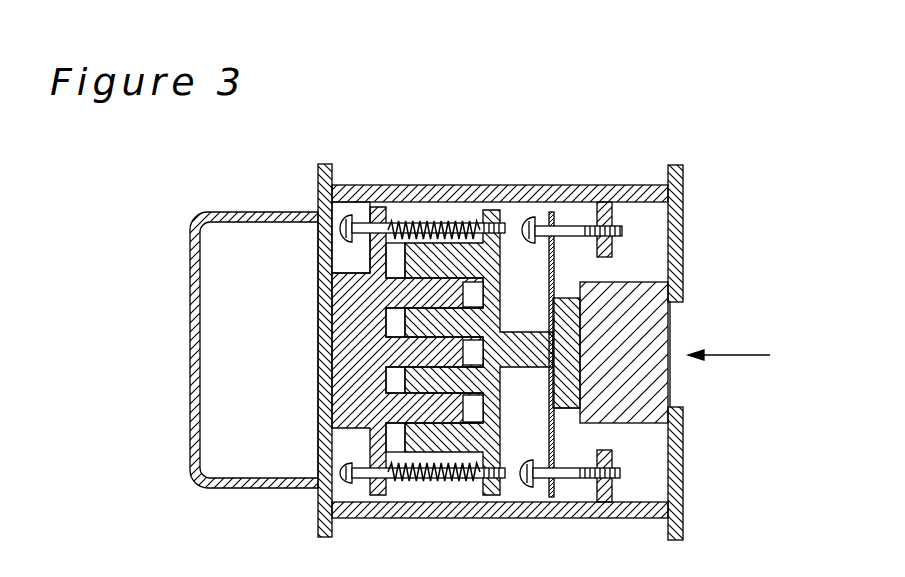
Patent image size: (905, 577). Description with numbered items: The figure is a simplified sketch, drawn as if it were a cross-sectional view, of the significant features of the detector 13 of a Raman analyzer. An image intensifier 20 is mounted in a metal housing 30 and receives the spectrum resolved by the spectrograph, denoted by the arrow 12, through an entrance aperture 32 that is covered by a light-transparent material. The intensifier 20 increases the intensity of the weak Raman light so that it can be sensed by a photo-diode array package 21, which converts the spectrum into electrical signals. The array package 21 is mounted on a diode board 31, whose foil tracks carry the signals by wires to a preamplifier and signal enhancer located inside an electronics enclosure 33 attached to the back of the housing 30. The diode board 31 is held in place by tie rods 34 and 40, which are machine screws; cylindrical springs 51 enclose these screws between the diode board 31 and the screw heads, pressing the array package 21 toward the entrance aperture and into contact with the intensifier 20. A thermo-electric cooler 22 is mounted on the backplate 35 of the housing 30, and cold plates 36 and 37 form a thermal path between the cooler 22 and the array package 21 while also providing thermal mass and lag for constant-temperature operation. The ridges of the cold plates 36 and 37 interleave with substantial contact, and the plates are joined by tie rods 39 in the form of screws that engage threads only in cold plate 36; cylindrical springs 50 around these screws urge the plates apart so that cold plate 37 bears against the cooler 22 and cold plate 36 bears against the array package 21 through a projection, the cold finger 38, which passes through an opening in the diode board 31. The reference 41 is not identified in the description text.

The arrow 12 is at (727, 350).
The detector 13 is at (570, 181).
The image intensifier 20 is at (612, 281).
The photo-diode array package 21 is at (556, 409).
The thermo-electric cooler 22 is at (320, 366).
The metal housing 30 is at (596, 186).
The diode board 31 is at (551, 290).
The entrance aperture 32 is at (672, 377).
The electronics enclosure 33 is at (190, 404).
The tie rod 34 is at (614, 232).
The backplate 35 is at (317, 188).
The cold plate 36 is at (500, 424).
The cold plate 37 is at (372, 256).
The cold finger 38 is at (552, 374).
The tie rods 39 is at (430, 235).
The tie rod 40 is at (613, 462).
The apertures 41 is at (471, 296).
The cylindrical springs 50 is at (456, 235).
The cylindrical springs 51 is at (545, 230).